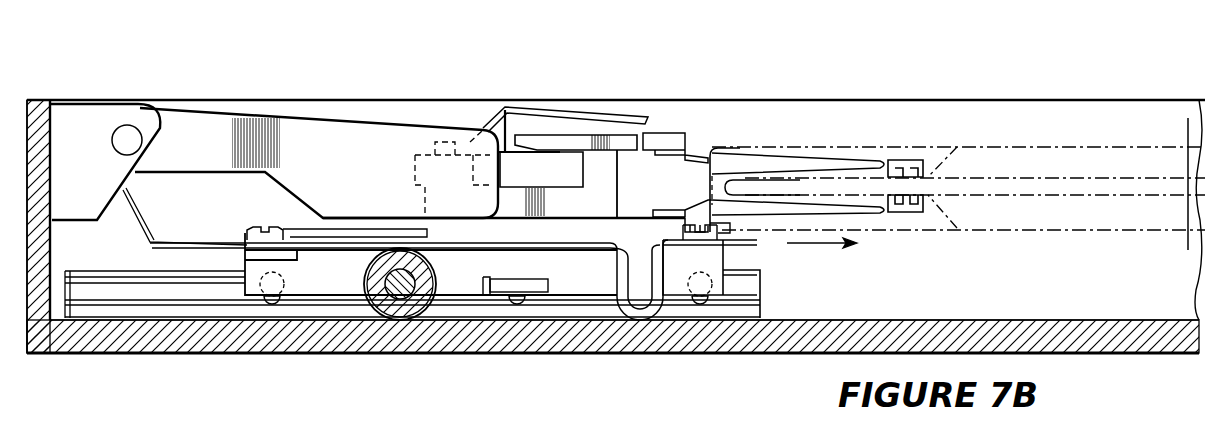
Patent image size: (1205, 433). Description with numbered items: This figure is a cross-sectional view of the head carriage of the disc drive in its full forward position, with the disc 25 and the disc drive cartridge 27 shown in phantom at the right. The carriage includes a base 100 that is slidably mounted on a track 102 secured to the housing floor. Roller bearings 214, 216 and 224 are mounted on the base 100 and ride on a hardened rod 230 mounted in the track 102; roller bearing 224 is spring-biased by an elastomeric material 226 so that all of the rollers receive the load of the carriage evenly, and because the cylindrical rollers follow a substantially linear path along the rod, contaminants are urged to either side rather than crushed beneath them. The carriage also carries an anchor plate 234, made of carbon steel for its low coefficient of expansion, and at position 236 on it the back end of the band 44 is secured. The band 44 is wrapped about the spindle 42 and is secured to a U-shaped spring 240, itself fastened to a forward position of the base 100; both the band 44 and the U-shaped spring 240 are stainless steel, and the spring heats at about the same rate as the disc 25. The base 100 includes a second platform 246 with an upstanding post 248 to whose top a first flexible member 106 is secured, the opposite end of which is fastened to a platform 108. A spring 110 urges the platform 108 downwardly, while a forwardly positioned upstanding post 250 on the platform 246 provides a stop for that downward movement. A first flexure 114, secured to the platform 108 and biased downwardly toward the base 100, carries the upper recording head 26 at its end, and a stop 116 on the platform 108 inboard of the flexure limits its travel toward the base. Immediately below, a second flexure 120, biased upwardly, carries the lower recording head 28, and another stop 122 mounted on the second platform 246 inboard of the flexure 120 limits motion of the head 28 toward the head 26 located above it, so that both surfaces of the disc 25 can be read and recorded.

The disc 25 is at (950, 147).
The upper recording head 26 is at (905, 165).
The disc drive cartridge 27 is at (1027, 145).
The lower recording head 28 is at (912, 212).
The spindle 42 is at (400, 282).
The band 44 is at (528, 242).
The base 100 is at (325, 280).
The track 102 is at (65, 297).
The first flexible member 106 is at (505, 132).
The platform 108 is at (550, 148).
The spring 110 is at (550, 117).
The first flexure 114 is at (823, 158).
The stop 116 is at (770, 167).
The second flexure 120 is at (865, 213).
The stop 122 is at (745, 207).
The roller bearing 214 is at (272, 297).
The roller bearing 216 is at (700, 297).
The roller bearing 224 is at (517, 297).
The elastomeric material 226 is at (525, 278).
The hardened rod 230 is at (137, 280).
The anchor plate 234 is at (320, 245).
The anchor position 236 is at (258, 227).
The U-shaped spring 240 is at (648, 315).
The second platform 246 is at (660, 158).
The upstanding post 248 is at (415, 155).
The upstanding post 250 is at (613, 193).